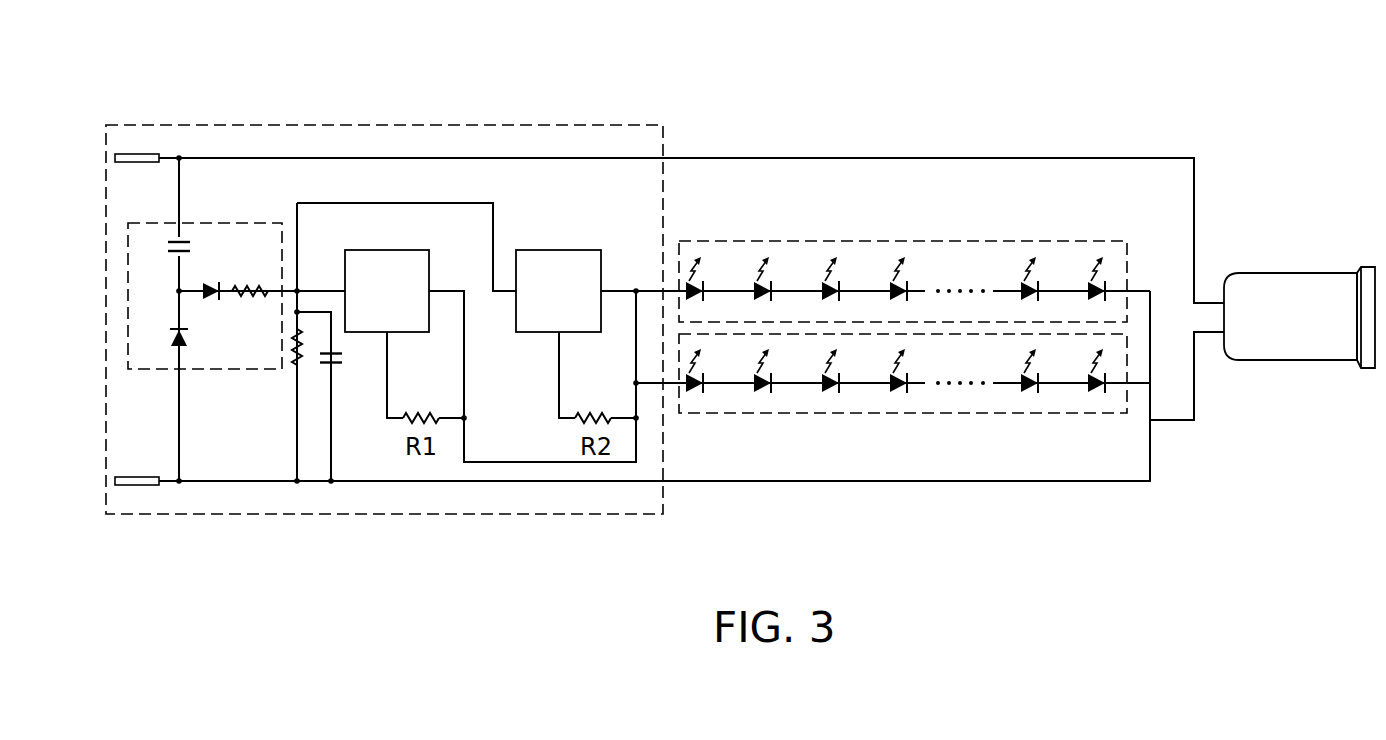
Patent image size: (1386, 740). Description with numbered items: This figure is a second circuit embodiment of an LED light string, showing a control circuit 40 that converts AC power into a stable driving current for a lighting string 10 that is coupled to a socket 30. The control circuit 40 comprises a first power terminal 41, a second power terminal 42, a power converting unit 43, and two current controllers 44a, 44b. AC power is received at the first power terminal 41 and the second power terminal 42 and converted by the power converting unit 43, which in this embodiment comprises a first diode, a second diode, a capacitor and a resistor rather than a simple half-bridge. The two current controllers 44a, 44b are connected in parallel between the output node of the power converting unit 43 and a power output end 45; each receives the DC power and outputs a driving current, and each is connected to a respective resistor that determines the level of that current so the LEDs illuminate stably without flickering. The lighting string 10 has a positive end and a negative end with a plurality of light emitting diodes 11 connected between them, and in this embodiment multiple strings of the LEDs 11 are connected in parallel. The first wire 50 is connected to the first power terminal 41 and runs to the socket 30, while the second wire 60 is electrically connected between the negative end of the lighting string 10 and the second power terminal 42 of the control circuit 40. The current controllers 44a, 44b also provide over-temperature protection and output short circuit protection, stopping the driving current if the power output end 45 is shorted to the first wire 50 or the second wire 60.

The lighting string 10 is at (914, 297).
The light emitting diode 11 is at (891, 280).
The socket 30 is at (1290, 273).
The control circuit 40 is at (346, 125).
The first power terminal 41 is at (137, 154).
The second power terminal 42 is at (137, 485).
The power converting unit 43 is at (176, 223).
The current controller 44a is at (380, 250).
The current controller 44b is at (556, 250).
The power output end 45 is at (636, 291).
The first wire 50 is at (858, 158).
The second wire 60 is at (925, 481).